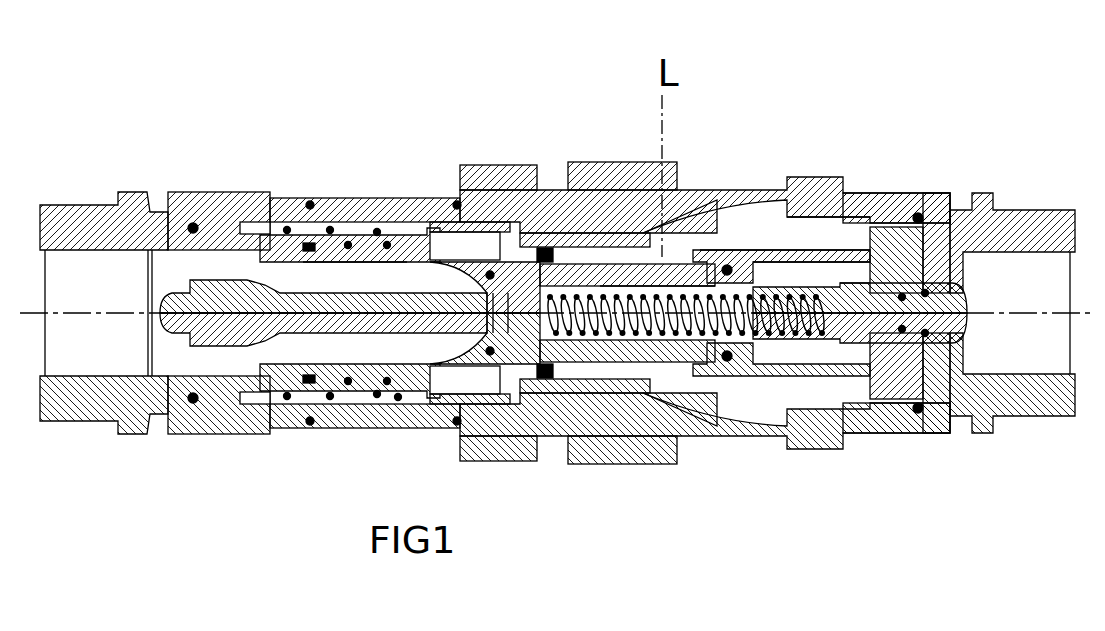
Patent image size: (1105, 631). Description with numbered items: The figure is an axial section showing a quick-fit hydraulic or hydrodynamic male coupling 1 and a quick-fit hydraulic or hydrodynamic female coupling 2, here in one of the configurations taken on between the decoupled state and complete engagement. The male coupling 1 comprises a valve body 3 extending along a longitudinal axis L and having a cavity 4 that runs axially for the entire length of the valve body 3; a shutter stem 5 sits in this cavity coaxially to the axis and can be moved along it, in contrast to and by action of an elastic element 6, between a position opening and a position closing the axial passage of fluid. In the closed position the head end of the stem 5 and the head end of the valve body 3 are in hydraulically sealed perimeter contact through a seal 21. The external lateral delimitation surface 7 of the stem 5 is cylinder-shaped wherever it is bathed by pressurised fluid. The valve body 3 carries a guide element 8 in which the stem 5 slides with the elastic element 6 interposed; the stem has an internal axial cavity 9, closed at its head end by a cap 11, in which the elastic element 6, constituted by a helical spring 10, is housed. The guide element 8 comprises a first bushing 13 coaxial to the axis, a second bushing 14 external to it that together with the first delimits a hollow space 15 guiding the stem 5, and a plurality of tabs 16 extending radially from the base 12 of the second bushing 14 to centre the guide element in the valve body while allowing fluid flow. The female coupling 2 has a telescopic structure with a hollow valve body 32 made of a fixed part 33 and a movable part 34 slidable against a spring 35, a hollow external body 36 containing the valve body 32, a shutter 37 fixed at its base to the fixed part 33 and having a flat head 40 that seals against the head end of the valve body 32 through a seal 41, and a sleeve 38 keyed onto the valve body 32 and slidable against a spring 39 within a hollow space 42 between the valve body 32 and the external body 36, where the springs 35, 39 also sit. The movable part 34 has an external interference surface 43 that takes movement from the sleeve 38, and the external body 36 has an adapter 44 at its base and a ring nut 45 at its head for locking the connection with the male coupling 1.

The male coupling 1 is at (878, 122).
The female coupling 2 is at (282, 145).
The valve body 3 is at (730, 197).
The cavity 4 is at (740, 233).
The shutter stem 5 is at (626, 275).
The elastic element 6 is at (765, 250).
The external lateral delimitation surface 7 is at (677, 260).
The guide element 8 is at (790, 385).
The internal axial cavity 9 is at (595, 292).
The helical spring 10 is at (622, 335).
The cap 11 is at (530, 273).
The base 12 is at (904, 370).
The first bushing 13 is at (785, 295).
The second bushing 14 is at (815, 265).
The hollow space 15 is at (830, 277).
The tabs 16 is at (900, 390).
The seal 21 is at (545, 380).
The hollow valve body 32 is at (360, 250).
The fixed part 33 is at (262, 400).
The movable part 34 is at (378, 385).
The spring 35 is at (387, 245).
The hollow external body 36 is at (330, 230).
The shutter 37 is at (361, 345).
The sleeve 38 is at (468, 190).
The spring 39 is at (348, 245).
The flat head 40 is at (490, 355).
The seal 41 is at (442, 380).
The hollow space 42 is at (310, 205).
The external interference surface 43 is at (410, 397).
The adapter 44 is at (85, 213).
The ring nut 45 is at (592, 160).